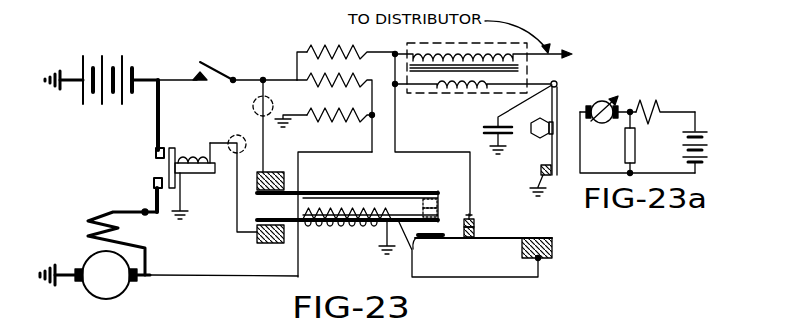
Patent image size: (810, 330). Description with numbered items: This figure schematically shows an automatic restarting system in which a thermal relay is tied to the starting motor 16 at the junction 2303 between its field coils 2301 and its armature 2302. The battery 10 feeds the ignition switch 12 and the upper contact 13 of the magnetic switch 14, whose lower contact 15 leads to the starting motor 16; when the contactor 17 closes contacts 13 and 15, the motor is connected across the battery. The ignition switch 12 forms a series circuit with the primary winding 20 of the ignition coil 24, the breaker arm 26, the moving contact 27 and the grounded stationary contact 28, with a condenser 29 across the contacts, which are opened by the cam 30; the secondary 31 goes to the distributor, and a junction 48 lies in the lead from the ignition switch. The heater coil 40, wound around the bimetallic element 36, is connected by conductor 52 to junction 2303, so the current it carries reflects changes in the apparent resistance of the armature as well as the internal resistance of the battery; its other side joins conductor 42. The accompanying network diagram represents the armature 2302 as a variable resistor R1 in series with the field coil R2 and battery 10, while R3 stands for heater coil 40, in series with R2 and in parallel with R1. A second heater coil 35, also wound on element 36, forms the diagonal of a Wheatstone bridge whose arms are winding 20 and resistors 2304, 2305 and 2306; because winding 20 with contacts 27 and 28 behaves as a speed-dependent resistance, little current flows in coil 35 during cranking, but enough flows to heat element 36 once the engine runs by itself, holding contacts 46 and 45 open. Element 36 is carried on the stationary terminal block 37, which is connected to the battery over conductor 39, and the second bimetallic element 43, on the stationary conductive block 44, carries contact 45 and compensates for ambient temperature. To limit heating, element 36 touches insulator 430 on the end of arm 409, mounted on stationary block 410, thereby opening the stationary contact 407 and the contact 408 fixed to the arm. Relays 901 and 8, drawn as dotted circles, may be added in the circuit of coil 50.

In FIG. 23, the battery 10 is at (85, 63).
In FIG. 23A, the battery 10 is at (704, 151).
In FIG. 23, the conductor 39 is at (185, 76).
In FIG. 23, the ignition switch 12 is at (260, 72).
In FIG. 23, the junction 48 is at (277, 78).
In FIG. 23, the relay 901 is at (253, 112).
In FIG. 23, the resistor 2304 is at (346, 47).
In FIG. 23, the resistor 2305 is at (346, 78).
In FIG. 23, the resistor 2306 is at (346, 112).
In FIG. 23, the secondary 31 is at (470, 48).
In FIG. 23, the ignition coil 24 is at (425, 96).
In FIG. 23, the primary winding 20 is at (470, 88).
In FIG. 23, the breaker arm 26 is at (560, 92).
In FIG. 23, the condenser 29 is at (486, 134).
In FIG. 23, the cam 30 is at (533, 137).
In FIG. 23, the grounded stationary contact 28 is at (540, 170).
In FIG. 23, the moving contact 27 is at (553, 180).
In FIG. 23, the magnetic switch 14 is at (146, 170).
In FIG. 23, the upper contact 13 is at (155, 153).
In FIG. 23, the contactor 17 is at (172, 148).
In FIG. 23, the relay 8 is at (234, 136).
In FIG. 23, the stationary terminal block 37 is at (284, 170).
In FIG. 23, the second bimetallic element 43 is at (369, 187).
In FIG. 23, the contact 45 is at (439, 192).
In FIG. 23, the contact 46 is at (440, 211).
In FIG. 23, the starting motor 16 is at (72, 260).
In FIG. 23, the field coils 2301 is at (82, 220).
In FIG. 23, the lower contact 15 is at (147, 195).
In FIG. 23, the conductor 42 is at (160, 214).
In FIG. 23, the coil 50 is at (190, 174).
In FIG. 23, the stationary conductive block 44 is at (265, 243).
In FIG. 23, the heater coil 40 is at (318, 238).
In FIG. 23, the heater coil 35 is at (349, 231).
In FIG. 23, the bimetallic element 36 is at (406, 220).
In FIG. 23, the stationary contact 407 is at (475, 222).
In FIG. 23, the contact 408 is at (475, 230).
In FIG. 23, the insulator 430 is at (482, 250).
In FIG. 23, the arm 409 is at (486, 240).
In FIG. 23, the stationary block 410 is at (523, 252).
In FIG. 23, the conductor 52 is at (206, 272).
In FIG. 23, the armature 2302 is at (82, 289).
In FIG. 23, the junction 2303 is at (147, 278).
In FIG. 23A, the variable resistor R1 is at (590, 106).
In FIG. 23A, the field coil resistance R2 is at (637, 106).
In FIG. 23A, the heater coil resistance R3 is at (635, 138).